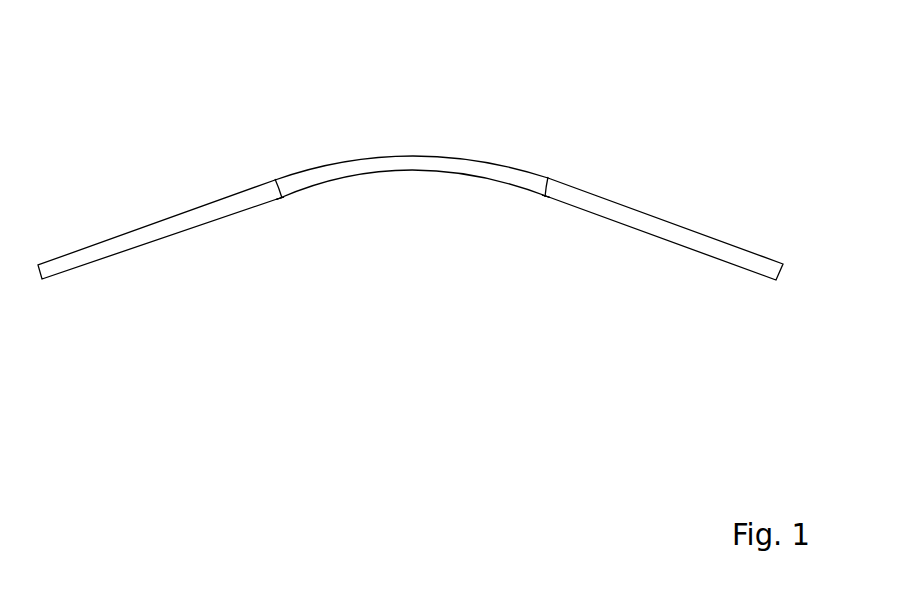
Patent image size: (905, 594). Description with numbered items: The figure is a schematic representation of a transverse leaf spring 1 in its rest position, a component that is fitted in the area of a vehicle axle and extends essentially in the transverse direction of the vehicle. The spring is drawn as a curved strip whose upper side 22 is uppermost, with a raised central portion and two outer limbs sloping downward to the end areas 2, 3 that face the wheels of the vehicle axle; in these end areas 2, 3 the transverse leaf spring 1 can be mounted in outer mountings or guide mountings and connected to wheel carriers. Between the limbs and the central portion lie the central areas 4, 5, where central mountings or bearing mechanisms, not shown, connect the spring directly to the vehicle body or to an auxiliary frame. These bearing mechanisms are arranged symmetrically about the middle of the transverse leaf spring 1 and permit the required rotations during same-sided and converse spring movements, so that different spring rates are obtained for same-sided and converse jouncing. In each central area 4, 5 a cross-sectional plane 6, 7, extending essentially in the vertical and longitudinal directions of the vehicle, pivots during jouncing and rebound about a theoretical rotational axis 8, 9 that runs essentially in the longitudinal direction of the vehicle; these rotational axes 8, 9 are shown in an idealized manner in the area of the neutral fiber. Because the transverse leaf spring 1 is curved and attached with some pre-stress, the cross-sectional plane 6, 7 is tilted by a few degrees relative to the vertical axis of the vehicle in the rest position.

The transverse leaf spring 1 is at (463, 115).
The end area of the transverse leaf spring 2 is at (48, 291).
The end area of the transverse leaf spring 3 is at (770, 289).
The central area of the transverse leaf spring 4 is at (280, 207).
The central area of the transverse leaf spring 5 is at (546, 207).
The cross-sectional plane of the transverse leaf spring 6 is at (280, 200).
The cross-sectional plane of the transverse leaf spring 7 is at (548, 198).
The theoretical rotational axis 8 is at (274, 180).
The theoretical rotational axis 9 is at (548, 184).
The upper side of the transverse leaf spring 22 is at (313, 168).